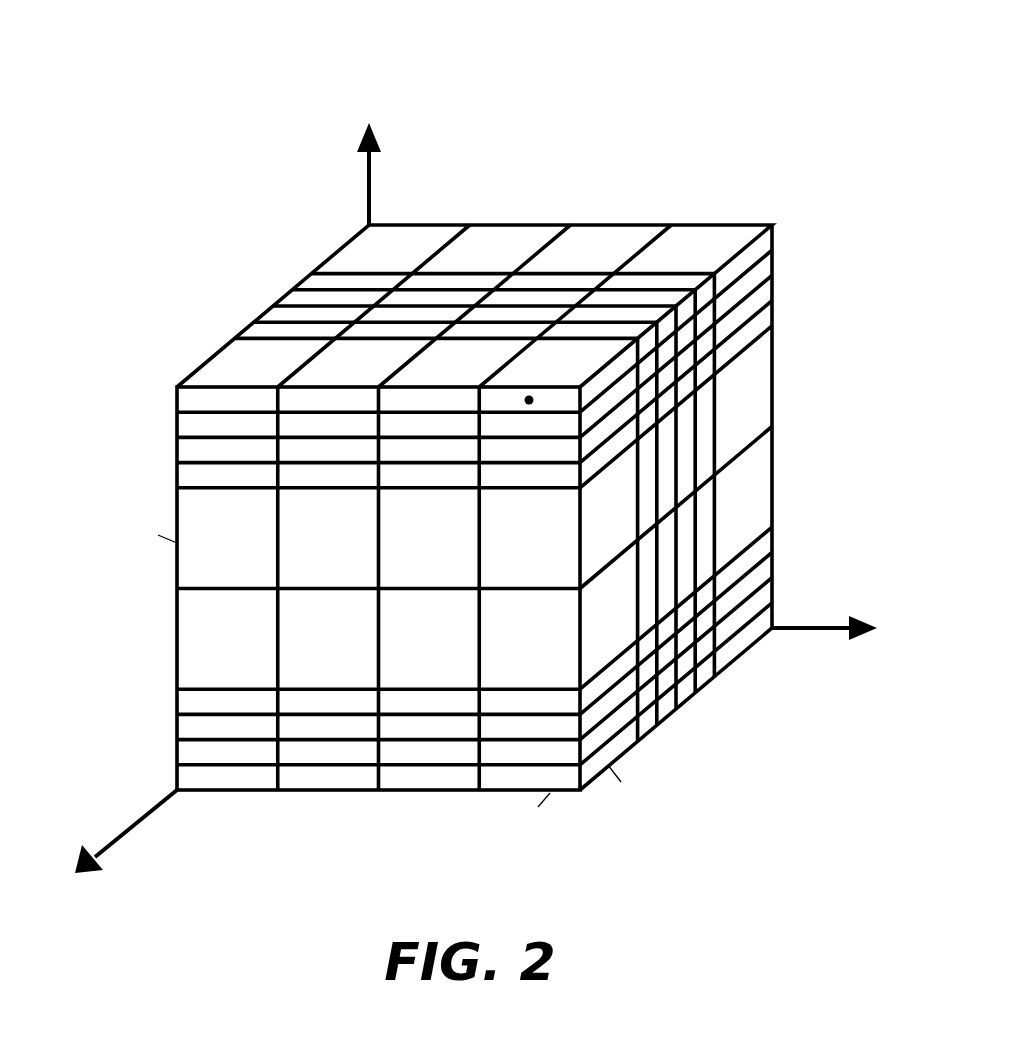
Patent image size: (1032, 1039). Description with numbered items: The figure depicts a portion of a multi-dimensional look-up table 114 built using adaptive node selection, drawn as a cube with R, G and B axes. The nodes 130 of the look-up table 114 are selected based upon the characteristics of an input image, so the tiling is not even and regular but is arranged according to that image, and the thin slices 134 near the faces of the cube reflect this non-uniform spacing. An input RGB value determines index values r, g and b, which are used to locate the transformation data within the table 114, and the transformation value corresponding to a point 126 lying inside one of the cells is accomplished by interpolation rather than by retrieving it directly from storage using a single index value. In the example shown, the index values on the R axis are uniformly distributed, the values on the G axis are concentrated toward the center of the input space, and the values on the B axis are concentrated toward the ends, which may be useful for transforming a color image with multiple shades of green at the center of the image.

The look-up table 114 is at (477, 463).
The point 126 is at (531, 398).
The nodes 130 is at (513, 273).
The thin color slices 134 is at (478, 410).